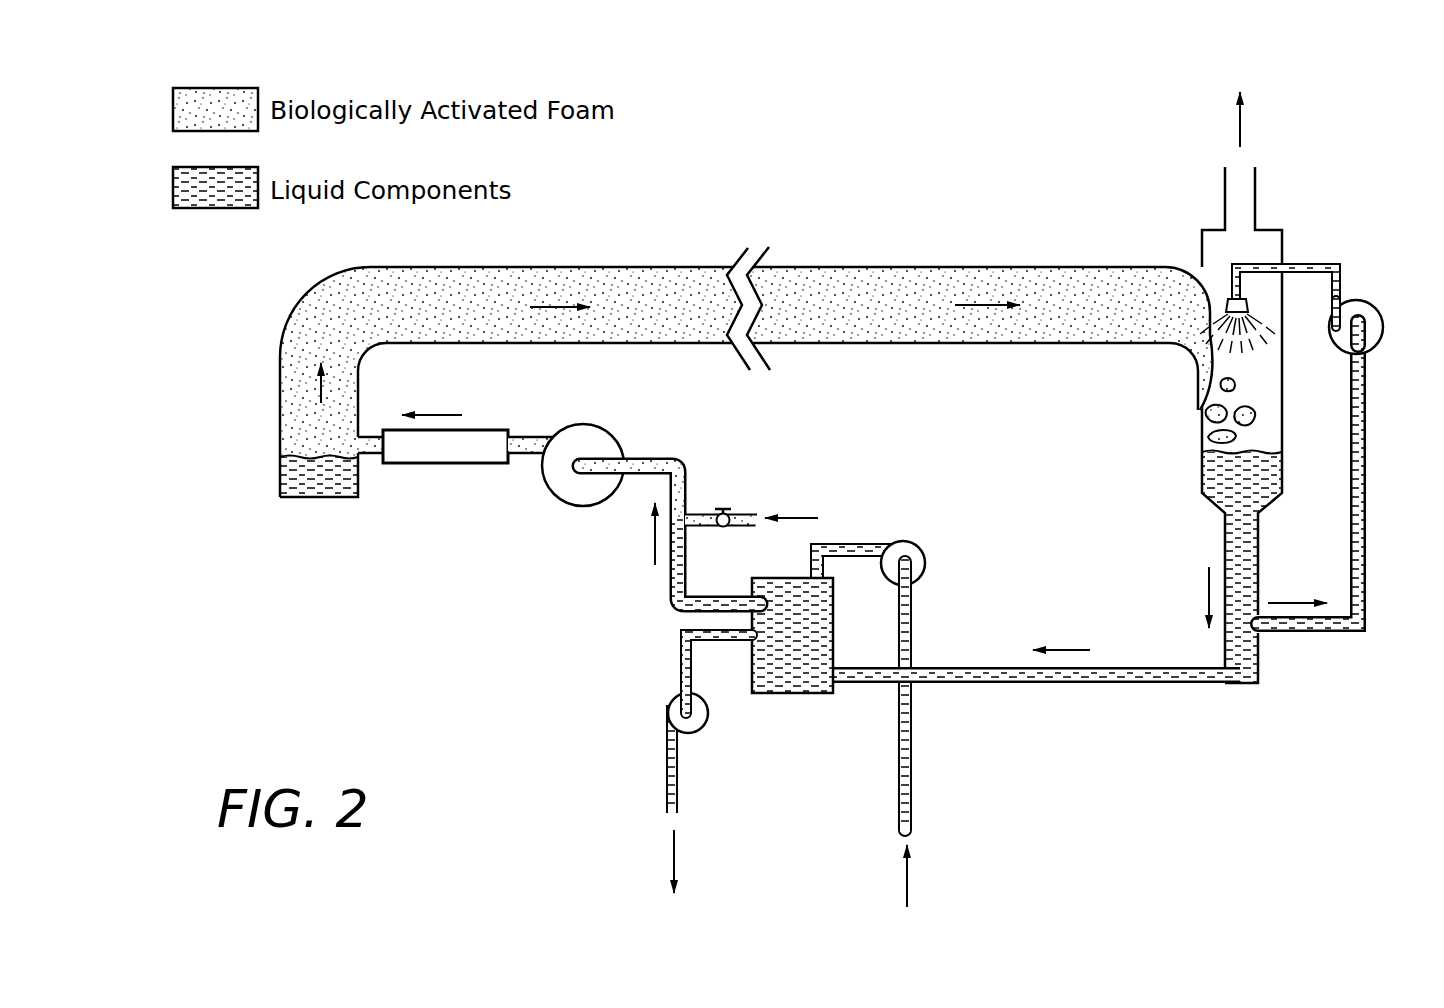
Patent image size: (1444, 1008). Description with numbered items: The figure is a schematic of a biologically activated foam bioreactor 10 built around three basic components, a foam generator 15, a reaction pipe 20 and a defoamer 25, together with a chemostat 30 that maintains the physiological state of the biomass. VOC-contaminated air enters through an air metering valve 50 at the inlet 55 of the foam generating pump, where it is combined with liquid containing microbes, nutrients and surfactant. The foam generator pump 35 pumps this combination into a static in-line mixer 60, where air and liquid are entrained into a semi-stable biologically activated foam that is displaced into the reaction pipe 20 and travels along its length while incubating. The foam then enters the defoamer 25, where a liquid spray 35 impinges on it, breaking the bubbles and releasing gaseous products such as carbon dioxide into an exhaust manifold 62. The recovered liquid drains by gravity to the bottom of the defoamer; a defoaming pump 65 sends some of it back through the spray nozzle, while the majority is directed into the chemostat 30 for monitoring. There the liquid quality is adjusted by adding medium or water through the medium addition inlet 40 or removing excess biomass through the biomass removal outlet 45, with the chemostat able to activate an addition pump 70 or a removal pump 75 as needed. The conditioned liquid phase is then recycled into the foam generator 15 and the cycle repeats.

The bioreactor 10 is at (950, 90).
The foam generator 15 is at (425, 558).
The reaction pipe 20 is at (677, 253).
The defoamer 25 is at (1198, 393).
The chemostat 30 is at (790, 705).
The foam generator pump 35 is at (588, 506).
The medium addition inlet 40 is at (910, 835).
The biomass removal outlet 45 is at (670, 822).
The air metering valve 50 is at (725, 508).
The inlet of the foam generating pump 55 is at (818, 518).
The static in-line mixer 60 is at (480, 430).
The exhaust manifold 62 is at (1245, 165).
The defoaming pump 65 is at (1366, 303).
The addition pump 70 is at (921, 552).
The removal pump 75 is at (706, 718).